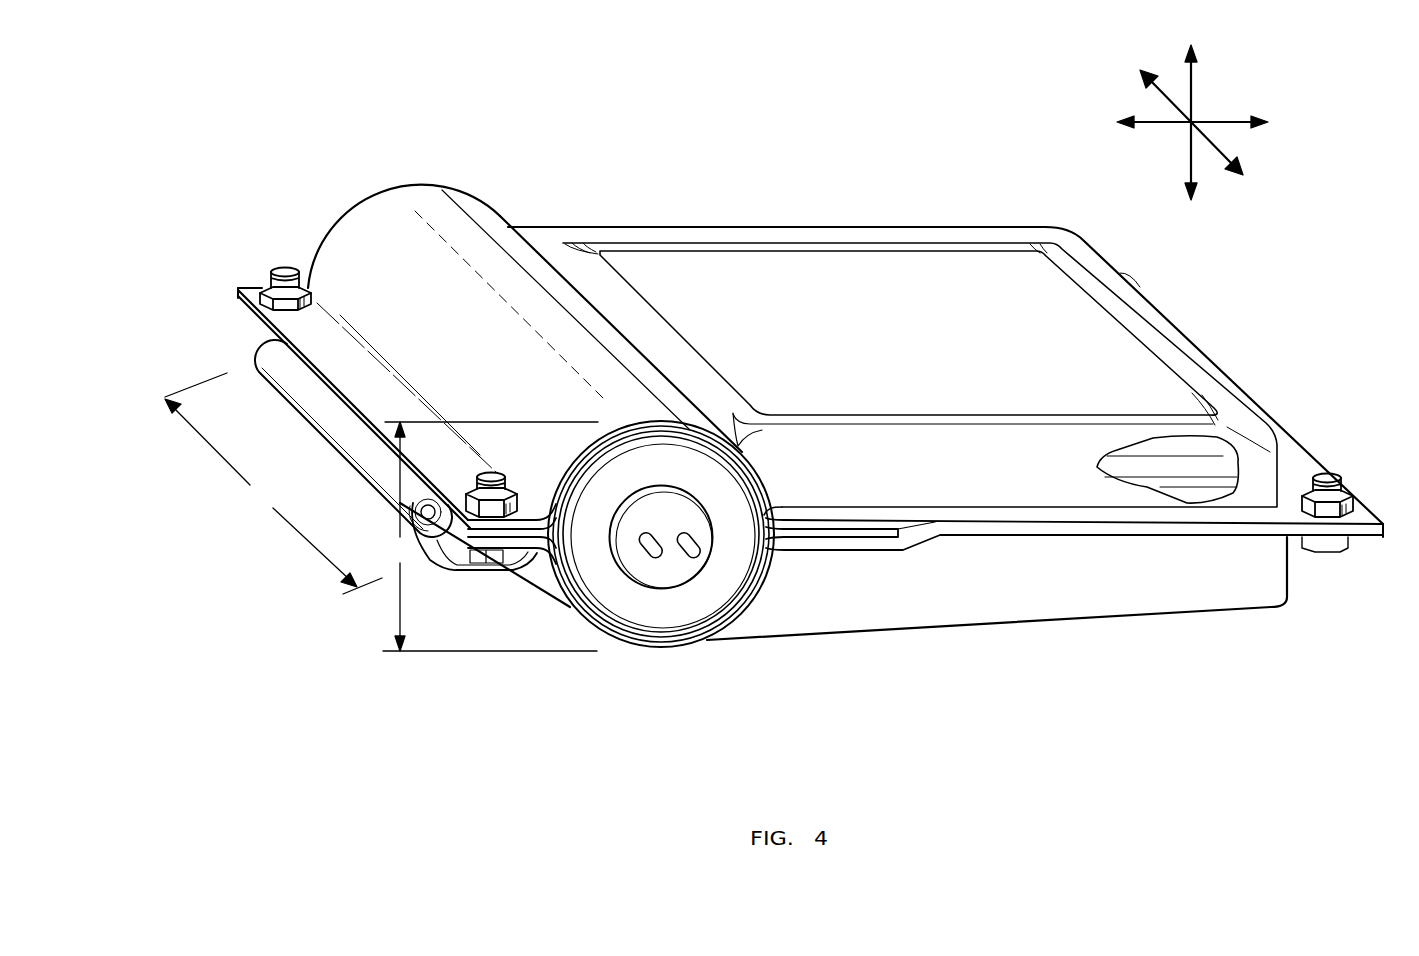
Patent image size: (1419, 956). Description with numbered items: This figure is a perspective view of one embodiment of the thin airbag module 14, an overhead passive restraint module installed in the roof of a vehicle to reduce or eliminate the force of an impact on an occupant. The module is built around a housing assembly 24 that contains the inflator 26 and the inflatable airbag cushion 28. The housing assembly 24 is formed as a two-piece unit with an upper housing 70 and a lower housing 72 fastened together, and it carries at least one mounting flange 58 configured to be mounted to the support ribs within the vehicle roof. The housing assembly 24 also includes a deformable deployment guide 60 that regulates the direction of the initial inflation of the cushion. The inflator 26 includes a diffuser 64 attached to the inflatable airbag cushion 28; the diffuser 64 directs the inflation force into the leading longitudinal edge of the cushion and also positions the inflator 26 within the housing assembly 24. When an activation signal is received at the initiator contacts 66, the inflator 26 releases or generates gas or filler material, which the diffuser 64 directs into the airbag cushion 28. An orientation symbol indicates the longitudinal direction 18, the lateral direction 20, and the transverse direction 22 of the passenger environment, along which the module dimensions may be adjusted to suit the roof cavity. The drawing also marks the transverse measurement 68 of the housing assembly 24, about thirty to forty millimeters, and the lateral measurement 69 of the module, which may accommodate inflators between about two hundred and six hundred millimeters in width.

The thin airbag module 14 is at (382, 237).
The longitudinal direction 18 is at (1222, 128).
The lateral direction 20 is at (1160, 92).
The transverse direction 22 is at (1193, 83).
The housing assembly 24 is at (530, 227).
The inflator 26 is at (684, 617).
The inflatable airbag cushion 28 is at (1210, 468).
The mounting flange 58 is at (513, 522).
The deformable deployment guide 60 is at (341, 452).
The diffuser 64 is at (604, 421).
The initiator contacts 66 is at (687, 553).
The transverse measurement 68 is at (490, 536).
The lateral measurement 69 is at (273, 483).
The upper housing 70 is at (1103, 363).
The lower housing 72 is at (1085, 620).